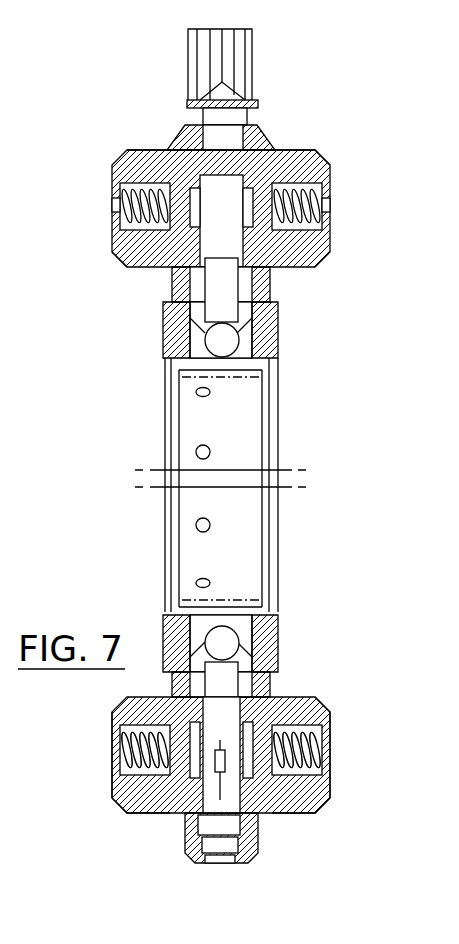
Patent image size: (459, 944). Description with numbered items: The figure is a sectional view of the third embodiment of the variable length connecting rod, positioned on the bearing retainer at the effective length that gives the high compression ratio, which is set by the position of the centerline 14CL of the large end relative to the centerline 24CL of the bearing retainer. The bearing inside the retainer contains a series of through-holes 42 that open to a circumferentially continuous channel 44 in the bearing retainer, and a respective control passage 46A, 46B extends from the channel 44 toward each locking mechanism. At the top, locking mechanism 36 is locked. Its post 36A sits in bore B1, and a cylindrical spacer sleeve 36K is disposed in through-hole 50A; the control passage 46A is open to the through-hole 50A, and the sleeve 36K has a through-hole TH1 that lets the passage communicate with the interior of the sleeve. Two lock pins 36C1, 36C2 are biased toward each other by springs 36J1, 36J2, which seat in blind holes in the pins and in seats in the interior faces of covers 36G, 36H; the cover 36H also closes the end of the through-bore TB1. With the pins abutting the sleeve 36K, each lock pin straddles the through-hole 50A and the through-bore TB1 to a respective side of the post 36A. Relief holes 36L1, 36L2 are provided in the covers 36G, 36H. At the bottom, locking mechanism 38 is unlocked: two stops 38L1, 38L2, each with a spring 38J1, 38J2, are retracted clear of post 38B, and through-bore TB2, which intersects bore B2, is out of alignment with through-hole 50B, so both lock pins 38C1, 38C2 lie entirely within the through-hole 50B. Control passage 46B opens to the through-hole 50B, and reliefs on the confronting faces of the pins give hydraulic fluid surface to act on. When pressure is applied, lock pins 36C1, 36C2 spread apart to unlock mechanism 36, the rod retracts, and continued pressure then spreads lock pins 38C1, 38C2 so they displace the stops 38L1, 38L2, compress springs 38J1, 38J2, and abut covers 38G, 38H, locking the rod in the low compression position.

The locking mechanism 36 is at (116, 113).
The locking mechanism 38 is at (380, 783).
The through-hole 50A is at (257, 100).
The through-hole 50B is at (198, 858).
The bore B1 is at (215, 120).
The bore B2 is at (240, 815).
The through-bore TB1 is at (143, 147).
The through-bore TB2 is at (305, 698).
The through-hole TH1 is at (182, 290).
The cylindrical spacer sleeve 36K is at (270, 122).
The cover 36H is at (320, 148).
The lock pin 36C1 is at (166, 148).
The lock pin 36C2 is at (280, 147).
The relief hole 36L1 is at (117, 200).
The relief hole 36L2 is at (323, 212).
The spring 36J1 is at (120, 213).
The spring 36J2 is at (318, 210).
The cover 36G is at (114, 248).
The post 36A is at (172, 314).
The control passage 46A is at (226, 297).
The control passage 46B is at (238, 660).
The channel 44 is at (236, 342).
The centerline of large end 14CL is at (288, 470).
The centerline of bearing retainer 24CL is at (289, 488).
The through-holes 42 is at (196, 582).
The post 38B is at (168, 688).
The cover 38H is at (322, 790).
The cover 38G is at (115, 793).
The stop 38L1 is at (150, 816).
The stop 38L2 is at (322, 808).
The spring 38J1 is at (120, 752).
The spring 38J2 is at (320, 749).
The lock pin 38C1 is at (165, 845).
The lock pin 38C2 is at (262, 846).